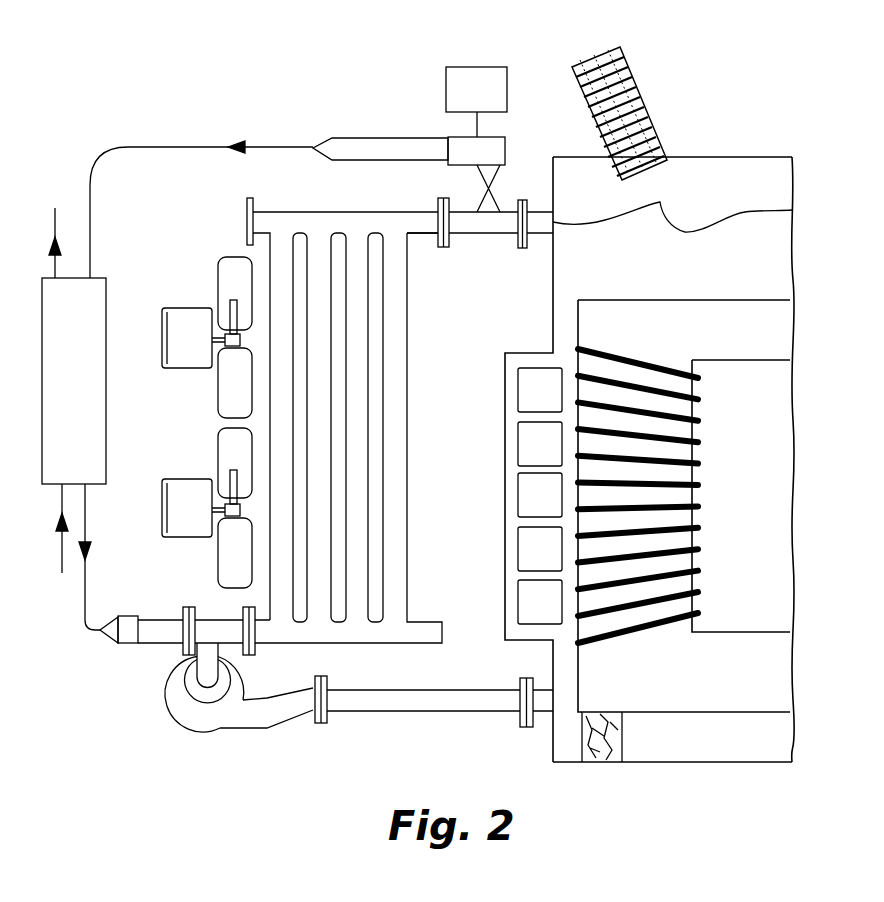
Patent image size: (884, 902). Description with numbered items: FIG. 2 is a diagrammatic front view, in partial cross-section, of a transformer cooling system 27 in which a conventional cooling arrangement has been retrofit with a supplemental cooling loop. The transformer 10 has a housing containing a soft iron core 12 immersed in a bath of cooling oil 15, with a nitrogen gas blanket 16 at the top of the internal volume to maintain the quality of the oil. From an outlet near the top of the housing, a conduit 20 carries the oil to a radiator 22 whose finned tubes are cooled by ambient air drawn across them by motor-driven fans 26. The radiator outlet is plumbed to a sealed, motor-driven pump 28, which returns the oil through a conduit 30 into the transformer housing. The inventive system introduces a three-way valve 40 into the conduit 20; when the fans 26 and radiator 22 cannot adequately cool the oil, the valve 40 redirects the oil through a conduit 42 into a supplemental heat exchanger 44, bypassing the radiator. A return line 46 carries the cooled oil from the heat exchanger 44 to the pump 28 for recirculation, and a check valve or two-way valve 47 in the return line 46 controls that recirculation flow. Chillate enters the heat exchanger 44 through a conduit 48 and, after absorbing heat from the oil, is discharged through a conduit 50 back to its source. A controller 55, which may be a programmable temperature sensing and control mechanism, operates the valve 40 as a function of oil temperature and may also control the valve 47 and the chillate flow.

The transformer 10 is at (565, 783).
The soft iron core 12 is at (673, 637).
The cooling oil 15 is at (753, 255).
The nitrogen gas blanket 16 is at (722, 173).
The conduit 20 is at (483, 235).
The radiator 22 is at (408, 412).
The motor-driven fans 26 is at (180, 479).
The transformer cooling system 27 is at (203, 108).
The pump 28 is at (180, 722).
The conduit 30 is at (392, 713).
The three-way valve 40 is at (447, 135).
The conduit 42 is at (90, 213).
The supplemental heat exchanger 44 is at (100, 348).
The return line 46 is at (85, 527).
The two-way valve 47 is at (128, 643).
The conduit 48 is at (62, 553).
The conduit 50 is at (50, 207).
The controller 55 is at (465, 66).